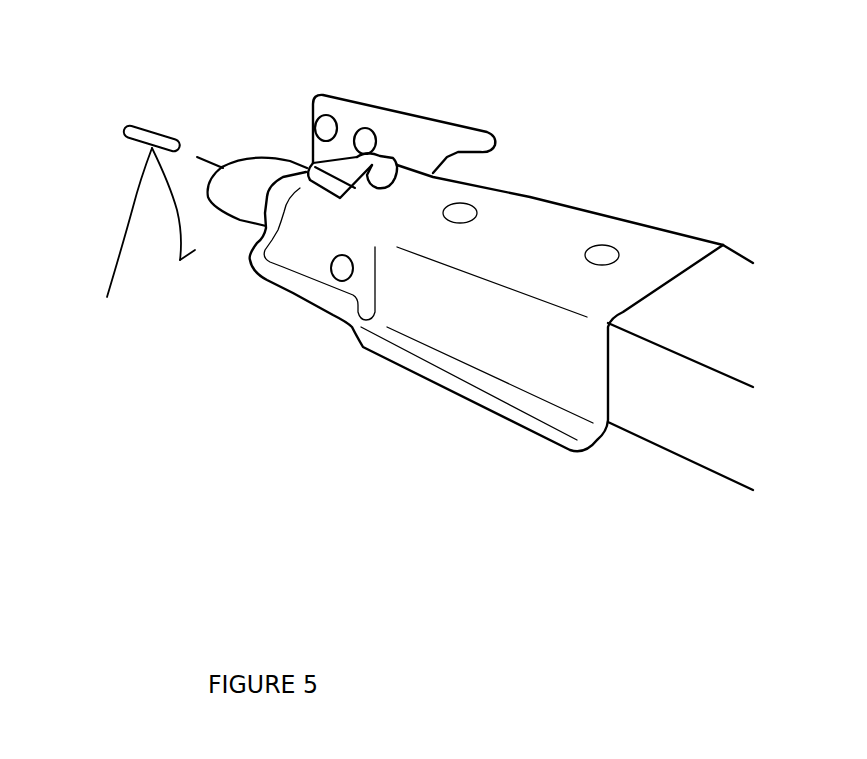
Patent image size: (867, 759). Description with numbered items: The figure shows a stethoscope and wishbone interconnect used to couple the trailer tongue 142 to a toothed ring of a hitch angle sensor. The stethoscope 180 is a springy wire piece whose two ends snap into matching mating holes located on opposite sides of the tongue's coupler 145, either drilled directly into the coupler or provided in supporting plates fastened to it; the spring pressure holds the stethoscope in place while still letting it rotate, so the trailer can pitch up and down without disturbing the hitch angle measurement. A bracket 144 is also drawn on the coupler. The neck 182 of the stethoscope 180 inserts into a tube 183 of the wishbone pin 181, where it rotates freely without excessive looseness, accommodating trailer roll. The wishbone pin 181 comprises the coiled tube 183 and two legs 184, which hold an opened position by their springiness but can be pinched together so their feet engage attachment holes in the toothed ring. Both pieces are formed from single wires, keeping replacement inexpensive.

The trailer tongue 142 is at (633, 465).
The mounting bracket 144 is at (432, 130).
The coupler 145 is at (497, 337).
The stethoscope 180 is at (262, 148).
The wishbone pin 181 is at (128, 180).
The neck 182 is at (212, 153).
The tube 183 is at (120, 120).
The legs 184 is at (178, 270).